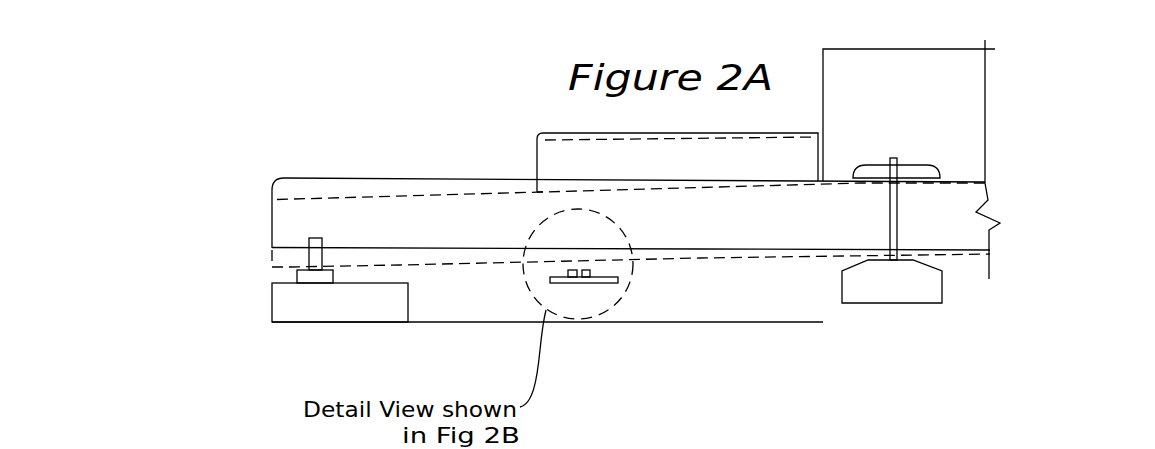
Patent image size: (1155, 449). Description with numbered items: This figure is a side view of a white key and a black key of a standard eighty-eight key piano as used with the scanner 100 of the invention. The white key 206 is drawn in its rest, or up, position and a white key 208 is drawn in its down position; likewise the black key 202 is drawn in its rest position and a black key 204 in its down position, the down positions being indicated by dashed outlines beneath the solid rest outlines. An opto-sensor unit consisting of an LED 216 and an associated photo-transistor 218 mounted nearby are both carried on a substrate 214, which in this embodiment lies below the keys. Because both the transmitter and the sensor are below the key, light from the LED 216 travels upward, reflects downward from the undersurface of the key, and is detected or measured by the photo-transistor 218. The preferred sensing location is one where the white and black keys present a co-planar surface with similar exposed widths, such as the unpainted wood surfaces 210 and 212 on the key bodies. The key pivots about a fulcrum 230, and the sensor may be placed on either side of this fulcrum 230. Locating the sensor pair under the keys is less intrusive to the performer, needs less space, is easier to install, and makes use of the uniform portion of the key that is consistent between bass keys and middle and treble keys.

The scanner 100 is at (184, 127).
The black key 202 is at (543, 133).
The black key 204 is at (542, 142).
The white key 206 is at (277, 177).
The white key 208 is at (277, 200).
The unpainted wood surface 210 is at (584, 247).
The unpainted wood surface 212 is at (588, 265).
The substrate 214 is at (550, 283).
The LED 216 is at (574, 283).
The photo-transistor 218 is at (586, 283).
The fulcrum 230 is at (902, 218).